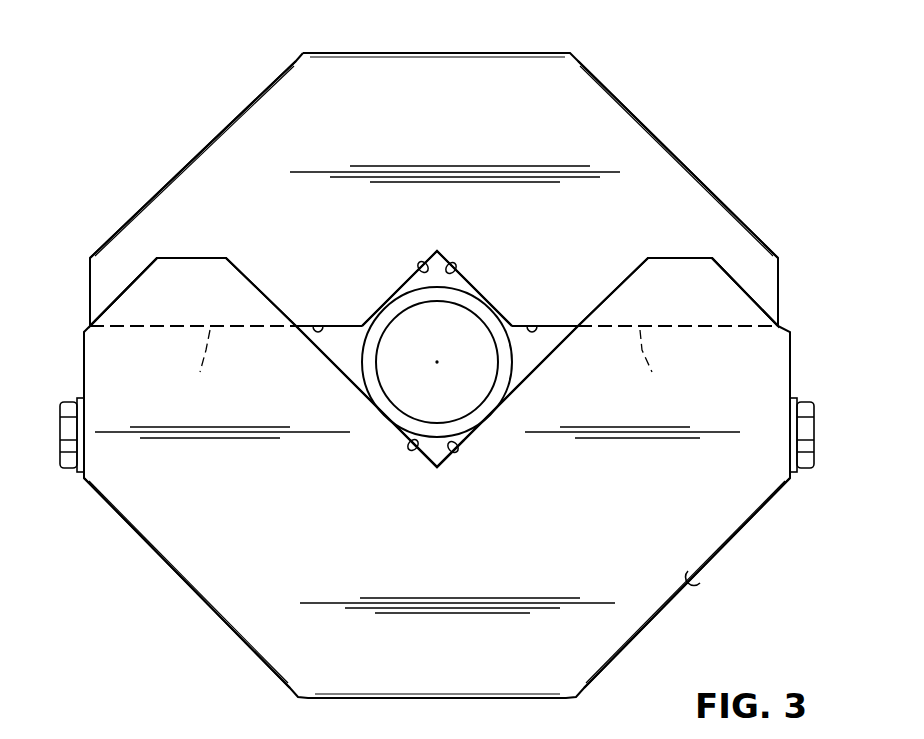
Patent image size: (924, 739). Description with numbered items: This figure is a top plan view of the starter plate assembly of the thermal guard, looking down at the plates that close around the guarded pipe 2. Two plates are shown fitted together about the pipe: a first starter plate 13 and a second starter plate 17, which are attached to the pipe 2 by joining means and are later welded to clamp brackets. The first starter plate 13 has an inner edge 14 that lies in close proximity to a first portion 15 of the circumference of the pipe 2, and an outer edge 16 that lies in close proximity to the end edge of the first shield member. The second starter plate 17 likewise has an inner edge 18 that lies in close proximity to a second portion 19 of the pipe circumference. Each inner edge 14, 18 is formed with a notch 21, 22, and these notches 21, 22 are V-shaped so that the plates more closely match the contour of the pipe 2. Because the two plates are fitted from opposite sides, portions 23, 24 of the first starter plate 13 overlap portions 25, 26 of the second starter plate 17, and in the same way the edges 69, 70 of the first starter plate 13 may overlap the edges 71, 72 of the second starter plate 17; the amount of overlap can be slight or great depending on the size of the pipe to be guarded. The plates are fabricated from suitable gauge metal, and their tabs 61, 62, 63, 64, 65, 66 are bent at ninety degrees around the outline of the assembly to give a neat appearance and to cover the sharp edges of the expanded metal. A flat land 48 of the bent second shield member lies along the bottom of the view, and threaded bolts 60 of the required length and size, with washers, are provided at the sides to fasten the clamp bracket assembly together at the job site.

The pipe 2 is at (518, 365).
The first starter plate 13 is at (719, 552).
The inner edge 14 is at (408, 449).
The first portion 15 is at (433, 460).
The outer edge 16 is at (692, 572).
The second starter plate 17 is at (640, 105).
The inner edge 18 is at (420, 263).
The second portion 19 is at (418, 290).
The notch 21 is at (437, 478).
The notch 22 is at (438, 247).
The portion 23 is at (166, 320).
The portion 24 is at (731, 320).
The portion 25 is at (226, 300).
The portion 26 is at (673, 300).
The flat land 48 is at (470, 738).
The threaded bolt 60 is at (63, 440).
The tab 61 is at (180, 582).
The tab 62 is at (422, 698).
The tab 63 is at (655, 622).
The tab 64 is at (716, 192).
The tab 65 is at (443, 53).
The tab 66 is at (189, 152).
The edge 69 is at (175, 258).
The edge 70 is at (667, 258).
The edge 71 is at (318, 326).
The edge 72 is at (532, 326).